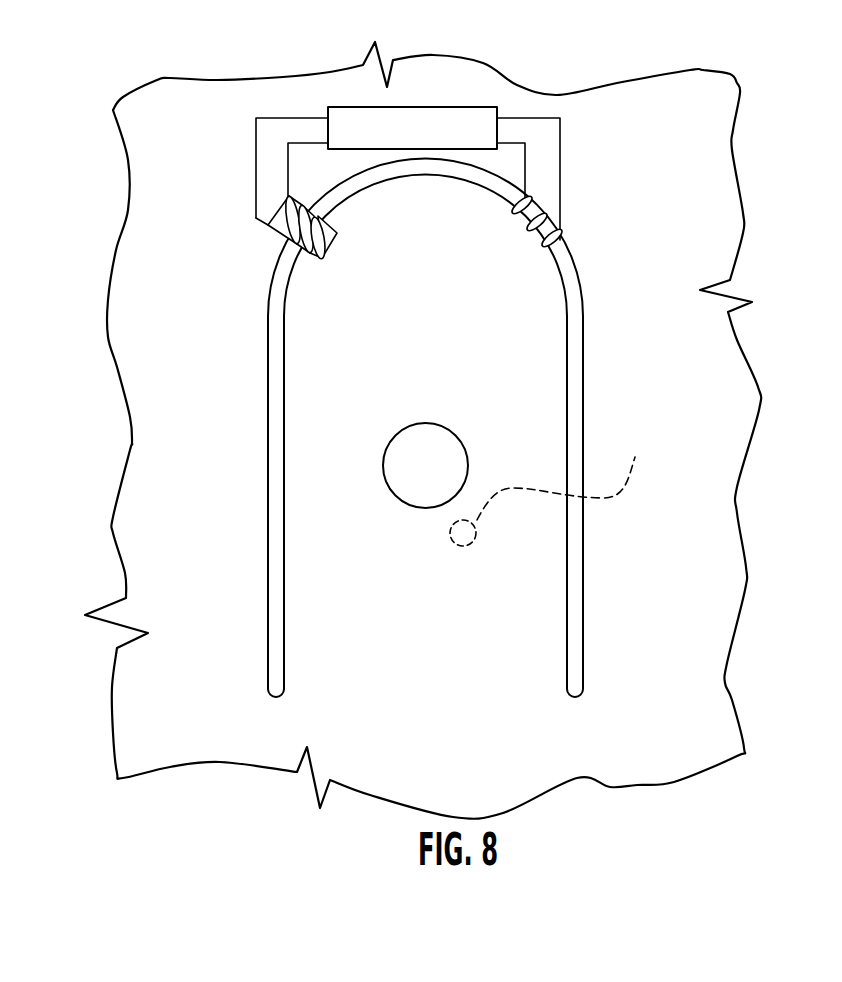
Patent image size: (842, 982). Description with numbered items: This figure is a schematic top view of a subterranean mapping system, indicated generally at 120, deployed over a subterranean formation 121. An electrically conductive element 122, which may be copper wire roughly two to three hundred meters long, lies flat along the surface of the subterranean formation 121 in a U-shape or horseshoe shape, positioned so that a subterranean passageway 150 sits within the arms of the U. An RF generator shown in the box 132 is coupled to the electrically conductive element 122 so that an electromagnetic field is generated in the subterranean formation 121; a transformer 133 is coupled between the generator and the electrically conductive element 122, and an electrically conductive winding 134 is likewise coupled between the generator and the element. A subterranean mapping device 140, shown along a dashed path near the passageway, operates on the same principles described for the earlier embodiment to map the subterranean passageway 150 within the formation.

The tissue treatment system 120 is at (205, 133).
The subterranean formation 121 is at (173, 625).
The electrically conductive element 122 is at (268, 508).
The RF generator 132 is at (483, 107).
The transformer 133 is at (277, 223).
The electrically conductive winding 134 is at (560, 242).
The subterranean mapping device 140 is at (551, 487).
The subterranean passageway 150 is at (384, 455).